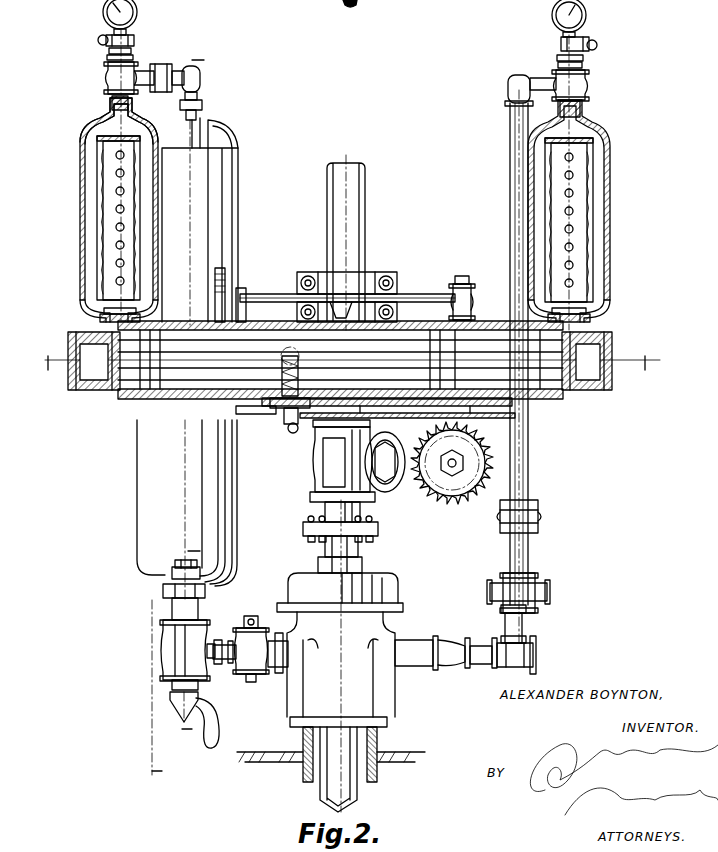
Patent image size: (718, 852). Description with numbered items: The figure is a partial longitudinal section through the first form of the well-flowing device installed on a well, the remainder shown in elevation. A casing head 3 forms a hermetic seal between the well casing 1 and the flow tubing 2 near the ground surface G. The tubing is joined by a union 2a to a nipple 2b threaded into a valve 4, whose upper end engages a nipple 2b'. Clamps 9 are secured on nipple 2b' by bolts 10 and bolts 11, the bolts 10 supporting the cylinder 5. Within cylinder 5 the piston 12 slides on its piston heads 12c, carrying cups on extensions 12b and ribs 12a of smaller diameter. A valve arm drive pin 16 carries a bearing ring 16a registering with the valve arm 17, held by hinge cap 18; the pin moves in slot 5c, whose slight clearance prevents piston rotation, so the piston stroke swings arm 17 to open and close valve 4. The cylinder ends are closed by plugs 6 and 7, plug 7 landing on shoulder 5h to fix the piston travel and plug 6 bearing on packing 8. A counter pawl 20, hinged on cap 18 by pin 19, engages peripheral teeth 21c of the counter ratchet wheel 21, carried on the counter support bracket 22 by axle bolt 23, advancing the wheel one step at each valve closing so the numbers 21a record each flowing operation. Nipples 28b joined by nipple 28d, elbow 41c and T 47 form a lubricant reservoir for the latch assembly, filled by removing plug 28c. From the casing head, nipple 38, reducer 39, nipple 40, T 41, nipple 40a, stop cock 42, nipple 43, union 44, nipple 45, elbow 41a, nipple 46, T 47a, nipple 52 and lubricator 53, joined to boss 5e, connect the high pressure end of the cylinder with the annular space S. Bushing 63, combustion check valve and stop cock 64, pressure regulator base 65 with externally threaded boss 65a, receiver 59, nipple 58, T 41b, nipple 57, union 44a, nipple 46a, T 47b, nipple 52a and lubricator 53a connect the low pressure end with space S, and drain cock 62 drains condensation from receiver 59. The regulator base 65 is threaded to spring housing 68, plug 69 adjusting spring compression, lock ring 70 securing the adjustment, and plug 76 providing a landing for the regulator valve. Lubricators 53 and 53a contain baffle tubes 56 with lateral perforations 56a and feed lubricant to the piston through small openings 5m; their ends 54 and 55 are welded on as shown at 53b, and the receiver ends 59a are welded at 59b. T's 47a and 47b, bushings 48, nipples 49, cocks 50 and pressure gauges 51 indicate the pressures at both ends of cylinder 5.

The well casing 1 is at (378, 744).
The flow tubing 2 is at (325, 548).
The union 2a is at (303, 529).
The nipple 2b is at (318, 512).
The nipple 2b' is at (378, 242).
The casing head 3 is at (367, 643).
The valve 4 is at (330, 477).
The cylinder 5 is at (137, 425).
The slot 5c is at (368, 396).
The boss 5e is at (104, 310).
The shoulder 5h is at (570, 405).
The openings 5m is at (100, 297).
The plug 6 is at (68, 335).
The plug 7 is at (72, 419).
The packing 8 is at (78, 392).
The clamps 9 is at (354, 277).
The bolts 10 is at (342, 307).
The bolts 11 is at (322, 272).
The piston 12 is at (205, 451).
The ribs 12a is at (140, 405).
The extensions 12b is at (530, 402).
The piston heads 12c is at (140, 397).
The valve arm drive pin 16 is at (277, 413).
The bearing ring 16a is at (317, 387).
The valve arm 17 is at (275, 405).
The hinge cap 18 is at (286, 421).
The pin 19 is at (292, 434).
The counter pawl 20 is at (407, 413).
The counter ratchet wheel 21 is at (455, 497).
The numbers 21a is at (490, 479).
The peripheral teeth 21c is at (443, 514).
The counter support bracket 22 is at (480, 421).
The axle bolt 23 is at (450, 476).
The nipples 28b is at (246, 312).
The plug 28c is at (457, 273).
The nipple 28d is at (392, 296).
The nipple 38 is at (425, 666).
The reducer 39 is at (447, 646).
The nipple 40 is at (487, 663).
The nipple 40a is at (523, 631).
The T 41 is at (536, 655).
The elbow 41a is at (508, 88).
The T 41b is at (200, 94).
The elbow 41c is at (240, 279).
The stop cock 42 is at (520, 591).
The nipple 43 is at (512, 553).
The union 44 is at (538, 516).
The union 44a is at (150, 74).
The nipple 45 is at (510, 162).
The nipple 46 is at (545, 90).
The nipple 46a is at (186, 96).
The T 47 is at (472, 299).
The T 47a is at (589, 85).
The T 47b is at (108, 76).
The bushings 48 is at (107, 57).
The nipples 49 is at (131, 52).
The cocks 50 is at (103, 37).
The pressure gauges 51 is at (551, 14).
The nipple 52 is at (582, 108).
The nipple 52a is at (112, 100).
The lubricator 53 is at (610, 172).
The lubricator 53a is at (97, 212).
The weld 53b is at (80, 139).
The lubricator end 54 is at (96, 119).
The lubricator end 55 is at (86, 291).
The baffle tube 56 is at (103, 180).
The lateral perforations 56a is at (116, 242).
The nipple 57 is at (203, 71).
The nipple 58 is at (202, 107).
The receiver 59 is at (225, 223).
The ends 59a is at (232, 134).
The weld 59b is at (240, 149).
The drain cock 62 is at (180, 703).
The bushing 63 is at (278, 674).
The combustion check valve and stop cock 64 is at (246, 684).
The pressure regulator base 65 is at (163, 650).
The externally threaded boss 65a is at (232, 622).
The spring housing 68 is at (172, 612).
The plug 69 is at (172, 566).
The lock ring 70 is at (178, 588).
The plug 76 is at (172, 683).
The annular space S is at (312, 791).
The ground surface G is at (425, 757).